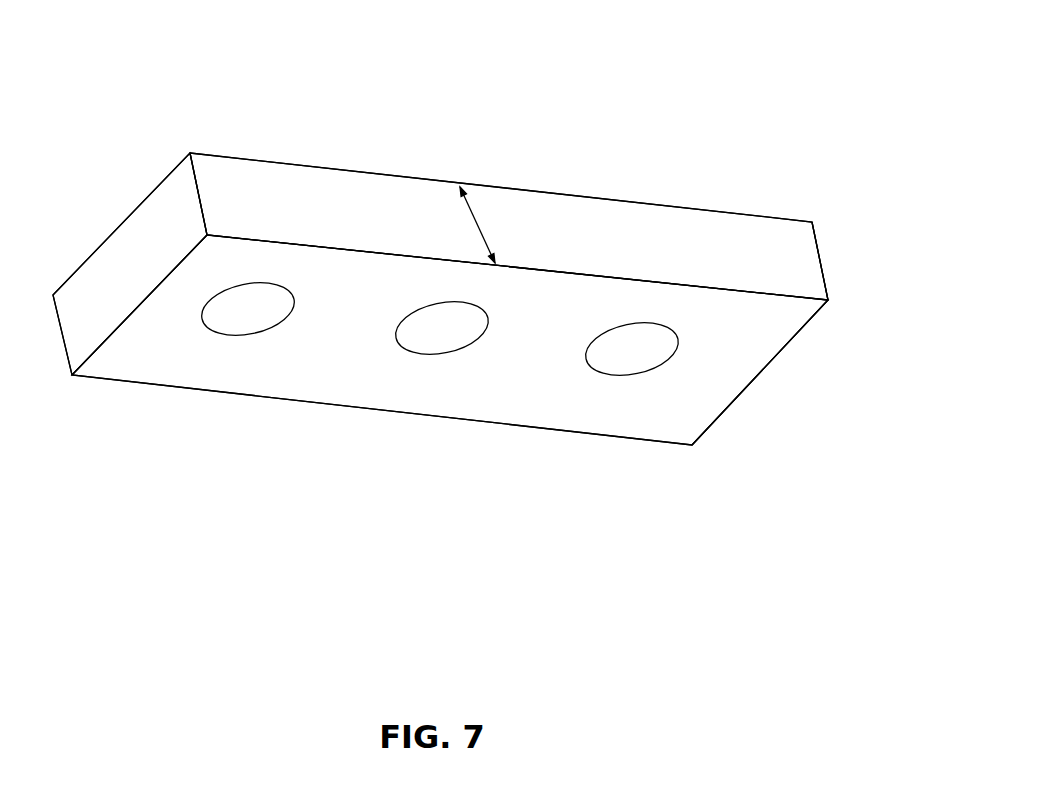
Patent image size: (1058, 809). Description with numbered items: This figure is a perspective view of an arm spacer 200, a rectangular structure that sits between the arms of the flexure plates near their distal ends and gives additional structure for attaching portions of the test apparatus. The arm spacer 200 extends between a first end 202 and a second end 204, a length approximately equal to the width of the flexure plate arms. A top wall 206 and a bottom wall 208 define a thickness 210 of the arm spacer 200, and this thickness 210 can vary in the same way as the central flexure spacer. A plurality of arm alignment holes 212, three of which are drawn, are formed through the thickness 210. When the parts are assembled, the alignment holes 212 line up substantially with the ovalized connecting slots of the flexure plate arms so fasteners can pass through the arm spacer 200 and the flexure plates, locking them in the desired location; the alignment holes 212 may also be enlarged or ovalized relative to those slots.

The arm spacer 200 is at (703, 208).
The first end 202 is at (140, 200).
The second end 204 is at (823, 268).
The top wall 206 is at (393, 173).
The bottom wall 208 is at (328, 375).
The thickness 210 is at (477, 222).
The arm alignment holes 212 is at (247, 302).